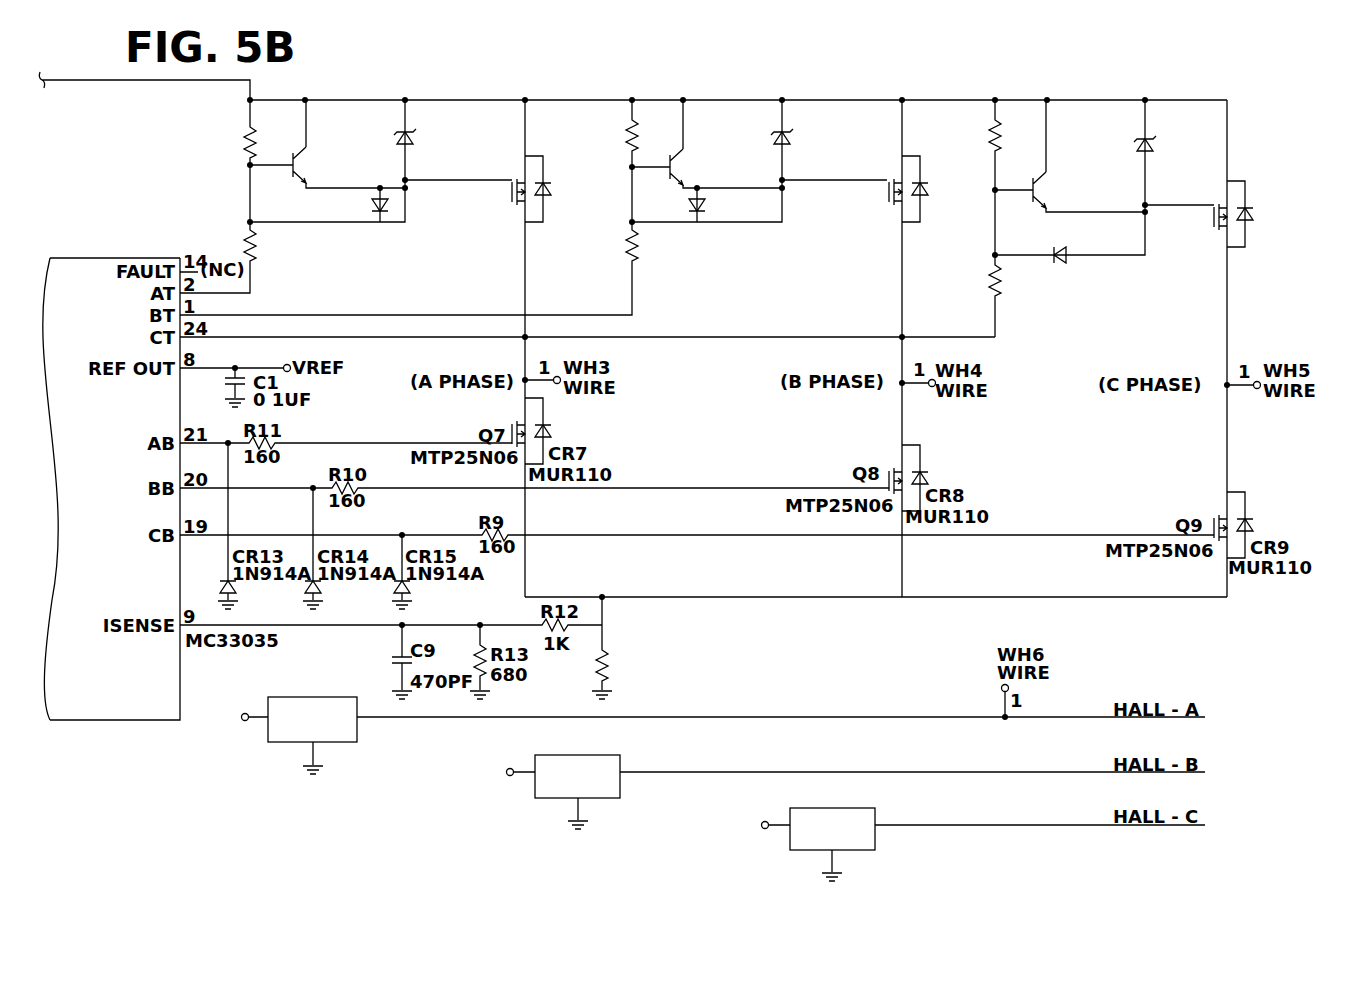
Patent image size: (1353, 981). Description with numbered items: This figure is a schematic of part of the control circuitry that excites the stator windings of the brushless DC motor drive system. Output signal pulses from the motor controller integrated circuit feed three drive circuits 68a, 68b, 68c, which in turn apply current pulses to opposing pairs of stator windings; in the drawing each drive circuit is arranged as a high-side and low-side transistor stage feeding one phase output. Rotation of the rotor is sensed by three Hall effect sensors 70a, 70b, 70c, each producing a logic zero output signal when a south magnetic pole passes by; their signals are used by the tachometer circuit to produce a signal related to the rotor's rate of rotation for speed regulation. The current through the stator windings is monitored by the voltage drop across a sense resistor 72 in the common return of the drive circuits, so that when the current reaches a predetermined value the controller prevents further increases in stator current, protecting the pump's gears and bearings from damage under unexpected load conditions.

The drive circuit 68a is at (597, 94).
The drive circuit 68b is at (959, 96).
The drive circuit 68c is at (1215, 97).
The Hall effect sensor 70a is at (280, 745).
The Hall effect sensor 70b is at (547, 800).
The Hall effect sensor 70c is at (800, 851).
The sense resistor 72 is at (592, 660).